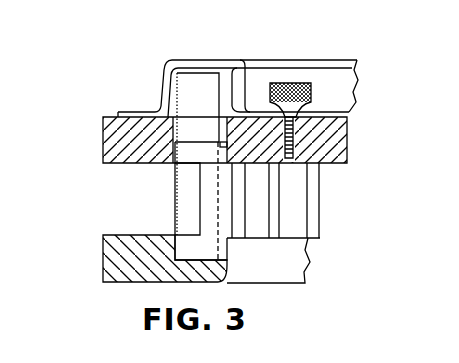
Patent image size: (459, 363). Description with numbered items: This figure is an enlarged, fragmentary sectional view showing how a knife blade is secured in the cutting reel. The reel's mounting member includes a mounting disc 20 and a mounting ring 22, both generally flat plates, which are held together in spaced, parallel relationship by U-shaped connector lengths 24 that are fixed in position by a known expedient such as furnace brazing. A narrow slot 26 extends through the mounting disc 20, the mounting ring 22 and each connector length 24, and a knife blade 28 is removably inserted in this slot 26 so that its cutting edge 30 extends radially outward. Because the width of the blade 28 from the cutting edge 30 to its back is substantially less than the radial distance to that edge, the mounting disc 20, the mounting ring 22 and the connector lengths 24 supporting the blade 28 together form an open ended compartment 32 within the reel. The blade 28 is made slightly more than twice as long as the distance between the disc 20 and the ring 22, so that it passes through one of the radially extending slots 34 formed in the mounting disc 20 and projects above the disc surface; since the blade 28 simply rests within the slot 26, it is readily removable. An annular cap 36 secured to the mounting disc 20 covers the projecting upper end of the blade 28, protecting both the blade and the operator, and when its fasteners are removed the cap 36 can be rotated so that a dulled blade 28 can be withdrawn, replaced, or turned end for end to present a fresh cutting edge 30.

The mounting disc 20 is at (103, 132).
The mounting ring 22 is at (103, 257).
The U-shaped connector lengths 24 is at (313, 231).
The narrow slot 26 is at (223, 145).
The knife blade 28 is at (187, 204).
The cutting edge 30 is at (173, 182).
The open ended compartment 32 is at (288, 270).
The radially extending slots 34 is at (138, 140).
The annular cap 36 is at (197, 60).